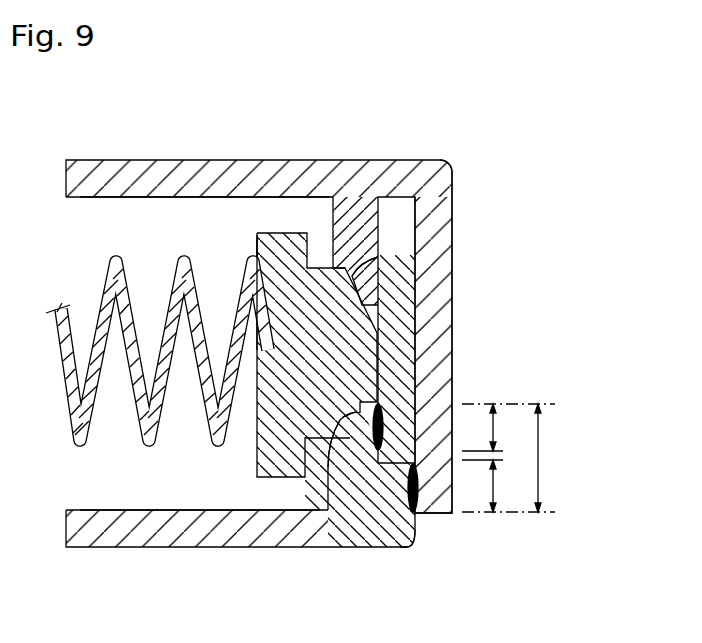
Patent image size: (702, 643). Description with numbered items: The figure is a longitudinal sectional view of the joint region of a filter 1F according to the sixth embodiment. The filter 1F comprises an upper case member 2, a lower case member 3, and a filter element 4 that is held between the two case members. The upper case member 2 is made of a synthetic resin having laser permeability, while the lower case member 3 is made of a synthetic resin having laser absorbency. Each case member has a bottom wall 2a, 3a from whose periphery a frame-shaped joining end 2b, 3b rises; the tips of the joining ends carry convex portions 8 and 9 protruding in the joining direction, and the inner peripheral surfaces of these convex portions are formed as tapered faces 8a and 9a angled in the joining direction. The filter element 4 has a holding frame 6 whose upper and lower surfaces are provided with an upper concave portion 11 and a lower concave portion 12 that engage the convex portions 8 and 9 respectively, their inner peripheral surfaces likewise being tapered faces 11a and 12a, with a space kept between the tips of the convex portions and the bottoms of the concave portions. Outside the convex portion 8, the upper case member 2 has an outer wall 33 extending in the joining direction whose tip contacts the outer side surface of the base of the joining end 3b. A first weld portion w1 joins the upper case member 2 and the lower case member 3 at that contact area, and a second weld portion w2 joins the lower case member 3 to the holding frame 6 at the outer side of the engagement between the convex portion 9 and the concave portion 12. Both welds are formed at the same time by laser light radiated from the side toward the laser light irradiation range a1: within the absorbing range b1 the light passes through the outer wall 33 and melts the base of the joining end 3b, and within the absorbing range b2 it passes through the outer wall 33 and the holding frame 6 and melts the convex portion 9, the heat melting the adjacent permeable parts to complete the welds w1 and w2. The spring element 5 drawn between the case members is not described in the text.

The filter 1F is at (568, 163).
The upper case member 2 is at (97, 157).
The bottom wall 2a is at (140, 160).
The joining end 2b is at (417, 180).
The lower case member 3 is at (127, 548).
The bottom wall 3a is at (182, 537).
The joining end 3b is at (409, 546).
The filter element 4 is at (273, 230).
The coil spring 5 is at (127, 270).
The holding frame 6 is at (257, 247).
The convex portion 8 is at (362, 268).
The tapered face 8a is at (343, 273).
The convex portion 9 is at (363, 420).
The tapered face 9a is at (352, 413).
The upper concave portion 11 is at (363, 290).
The tapered face 11a is at (343, 273).
The lower concave portion 12 is at (360, 418).
The tapered face 12a is at (352, 413).
The outer wall 33 is at (433, 320).
The laser light irradiation range a1 is at (541, 456).
The laser light absorbing range b1 is at (496, 490).
The laser light absorbing range b2 is at (497, 430).
The first weld portion w1 is at (420, 493).
The second weld portion w2 is at (382, 405).